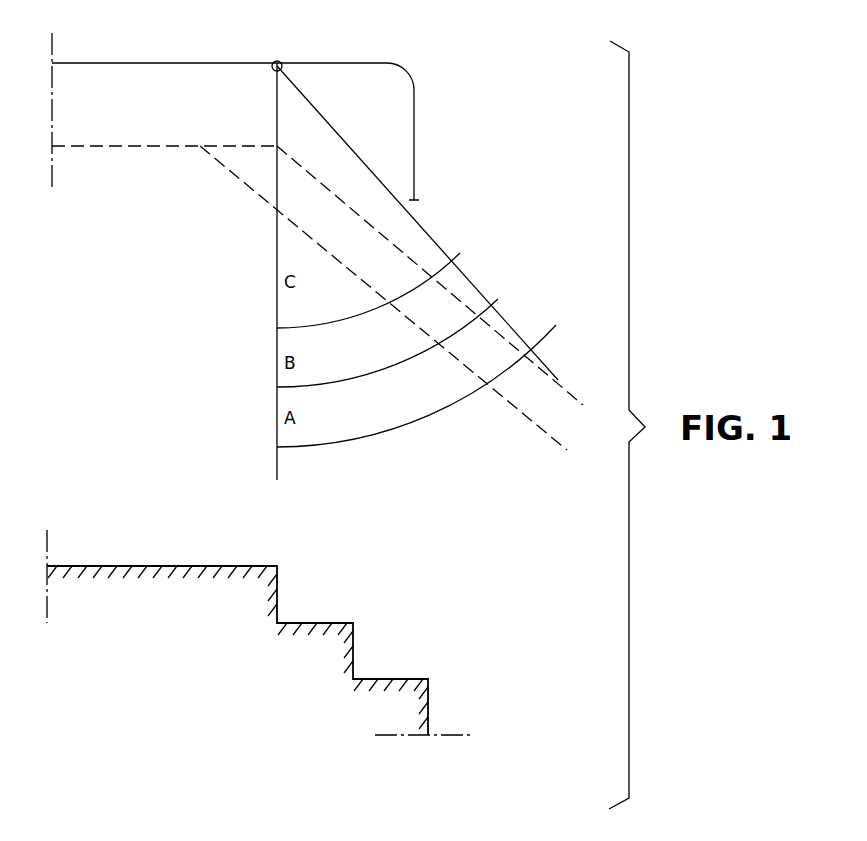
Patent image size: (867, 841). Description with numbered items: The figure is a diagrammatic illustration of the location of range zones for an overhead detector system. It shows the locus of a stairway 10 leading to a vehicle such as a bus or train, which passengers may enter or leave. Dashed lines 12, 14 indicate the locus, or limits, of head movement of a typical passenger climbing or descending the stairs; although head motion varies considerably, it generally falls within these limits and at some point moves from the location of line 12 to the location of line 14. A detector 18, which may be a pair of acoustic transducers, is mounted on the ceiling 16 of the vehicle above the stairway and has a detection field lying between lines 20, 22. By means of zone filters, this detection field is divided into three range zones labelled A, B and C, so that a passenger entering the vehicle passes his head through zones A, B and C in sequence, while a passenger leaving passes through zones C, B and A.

The locus of a stairway 10 is at (122, 566).
The dashed line 12 is at (528, 413).
The dashed line 14 is at (557, 390).
The ceiling 16 is at (414, 128).
The detector 18 is at (279, 62).
The line 20 is at (277, 268).
The line 22 is at (415, 218).